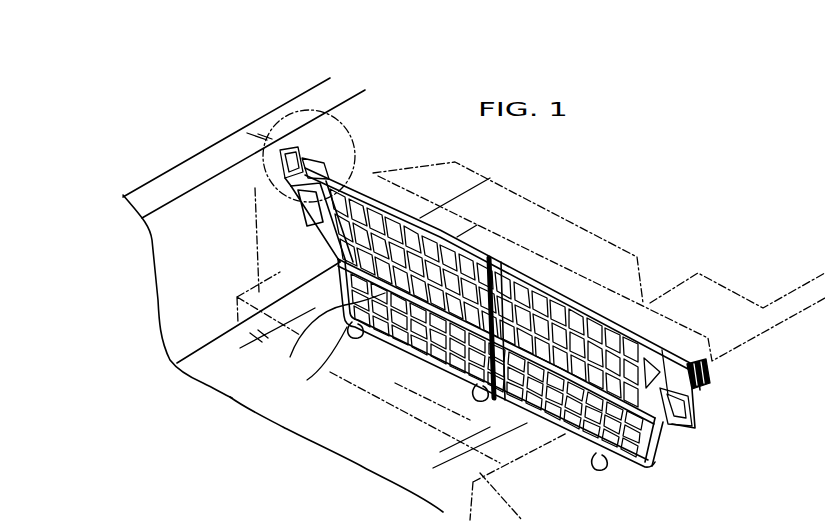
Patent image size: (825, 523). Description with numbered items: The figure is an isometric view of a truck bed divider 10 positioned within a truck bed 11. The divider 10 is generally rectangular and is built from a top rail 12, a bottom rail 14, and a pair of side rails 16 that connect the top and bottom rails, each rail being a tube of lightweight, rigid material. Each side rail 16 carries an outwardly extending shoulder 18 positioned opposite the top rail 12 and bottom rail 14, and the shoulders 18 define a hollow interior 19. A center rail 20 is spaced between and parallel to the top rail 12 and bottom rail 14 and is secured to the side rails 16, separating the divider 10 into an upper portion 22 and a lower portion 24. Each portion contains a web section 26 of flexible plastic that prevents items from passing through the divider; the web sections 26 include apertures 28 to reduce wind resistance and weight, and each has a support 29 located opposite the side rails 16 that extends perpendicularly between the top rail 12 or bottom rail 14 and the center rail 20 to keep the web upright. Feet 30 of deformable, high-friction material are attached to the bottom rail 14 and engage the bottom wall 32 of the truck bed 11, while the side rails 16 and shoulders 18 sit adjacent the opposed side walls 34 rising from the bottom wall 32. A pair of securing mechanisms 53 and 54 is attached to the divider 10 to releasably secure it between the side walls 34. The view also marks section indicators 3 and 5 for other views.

The truck bed divider 10 is at (484, 284).
The truck bed 11 is at (258, 421).
The top rail 12 is at (497, 273).
The bottom rail 14 is at (453, 378).
The side rails 16 is at (296, 222).
The shoulder 18 is at (282, 218).
The hollow interior 19 is at (682, 402).
The center rail 20 is at (350, 215).
The upper portion 22 is at (378, 227).
The lower portion 24 is at (291, 355).
The web sections 26 is at (592, 312).
The apertures 28 is at (500, 290).
The support 29 is at (481, 258).
The feet 30 is at (324, 370).
The bottom wall 32 is at (325, 425).
The side walls 34 is at (178, 213).
The securing mechanism 53 is at (316, 142).
The securing mechanism 54 is at (673, 337).
The section line 3 is at (307, 131).
The section line 5 is at (654, 322).